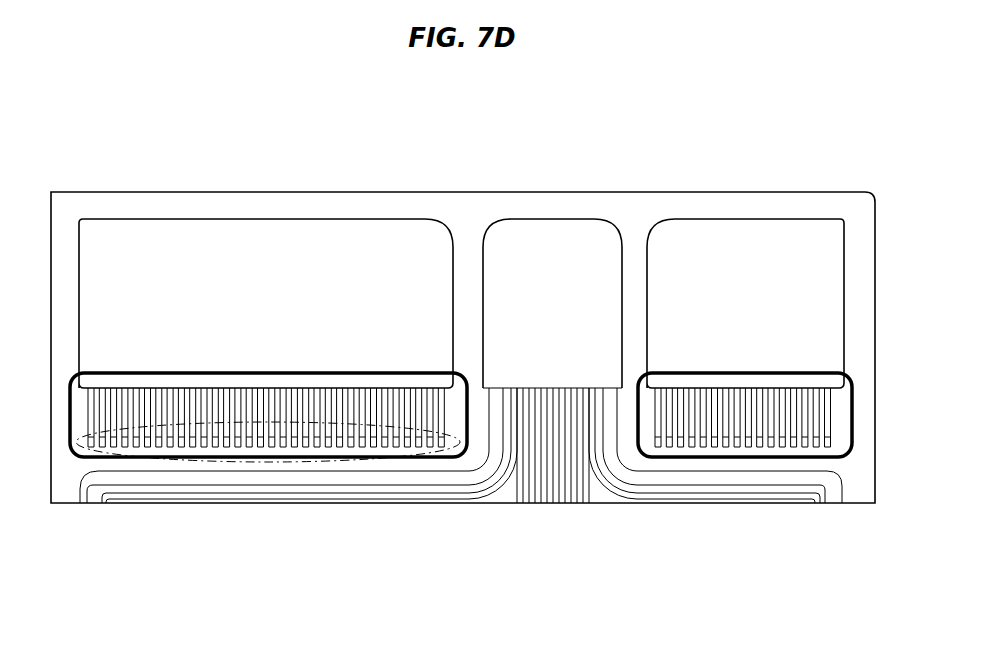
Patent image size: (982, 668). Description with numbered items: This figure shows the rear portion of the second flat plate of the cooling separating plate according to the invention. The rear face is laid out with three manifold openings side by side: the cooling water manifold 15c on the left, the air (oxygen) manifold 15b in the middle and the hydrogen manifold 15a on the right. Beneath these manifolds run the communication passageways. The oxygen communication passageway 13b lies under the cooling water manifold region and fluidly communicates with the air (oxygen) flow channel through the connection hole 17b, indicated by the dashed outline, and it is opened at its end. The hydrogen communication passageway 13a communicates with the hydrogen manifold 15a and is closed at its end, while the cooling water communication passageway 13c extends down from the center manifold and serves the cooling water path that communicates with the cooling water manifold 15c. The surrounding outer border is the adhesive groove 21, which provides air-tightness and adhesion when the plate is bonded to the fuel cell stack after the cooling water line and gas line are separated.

The adhesive groove 21 is at (494, 200).
The hydrogen manifold 15a is at (740, 238).
The air (oxygen) manifold 15b is at (543, 235).
The cooling water manifold 15c is at (245, 245).
The hydrogen communication passageway 13a is at (745, 457).
The oxygen communication passageway 13b is at (288, 458).
The cooling water communication passageway 13c is at (550, 480).
The connection hole 17b is at (178, 462).